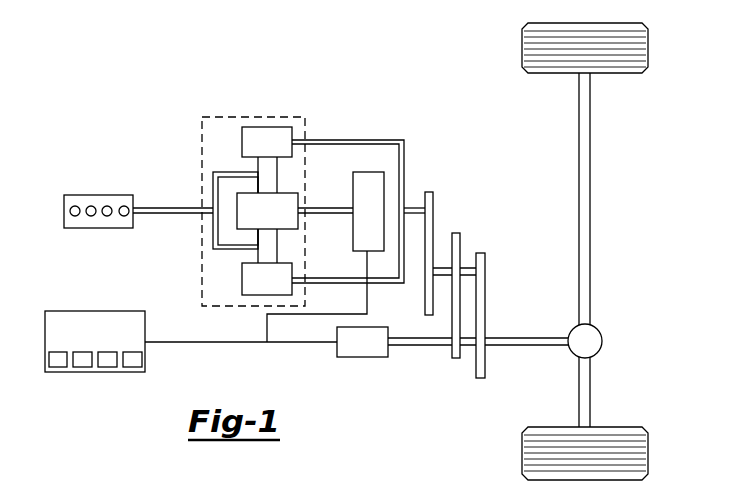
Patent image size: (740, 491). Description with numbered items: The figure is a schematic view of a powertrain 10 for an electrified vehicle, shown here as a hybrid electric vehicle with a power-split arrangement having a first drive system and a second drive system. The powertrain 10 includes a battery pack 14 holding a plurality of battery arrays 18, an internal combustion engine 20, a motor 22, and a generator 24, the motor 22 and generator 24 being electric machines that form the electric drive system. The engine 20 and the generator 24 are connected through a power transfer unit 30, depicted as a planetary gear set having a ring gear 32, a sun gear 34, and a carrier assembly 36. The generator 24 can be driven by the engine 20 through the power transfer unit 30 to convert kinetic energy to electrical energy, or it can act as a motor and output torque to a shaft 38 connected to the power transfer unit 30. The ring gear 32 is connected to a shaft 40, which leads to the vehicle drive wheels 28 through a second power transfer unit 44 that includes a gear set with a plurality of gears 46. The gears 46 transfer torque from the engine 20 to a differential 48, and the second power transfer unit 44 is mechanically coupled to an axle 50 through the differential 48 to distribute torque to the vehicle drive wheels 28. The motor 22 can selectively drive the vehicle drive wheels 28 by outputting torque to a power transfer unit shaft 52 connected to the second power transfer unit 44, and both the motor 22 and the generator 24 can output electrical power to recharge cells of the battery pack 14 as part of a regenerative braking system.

The powertrain 10 is at (84, 52).
The battery pack 14 is at (96, 311).
The battery arrays 18 is at (57, 367).
The internal combustion engine 20 is at (65, 196).
The motor 22 is at (364, 357).
The generator 24 is at (400, 181).
The vehicle drive wheels 28 is at (648, 47).
The power transfer unit 30 is at (306, 118).
The ring gear 32 is at (242, 142).
The sun gear 34 is at (290, 229).
The carrier assembly 36 is at (213, 193).
The shaft 38 is at (328, 207).
The shaft 40 is at (415, 215).
The second power transfer unit 44 is at (505, 202).
The gears 46 is at (433, 203).
The differential 48 is at (602, 341).
The axle 50 is at (591, 200).
The power transfer unit shaft 52 is at (423, 346).